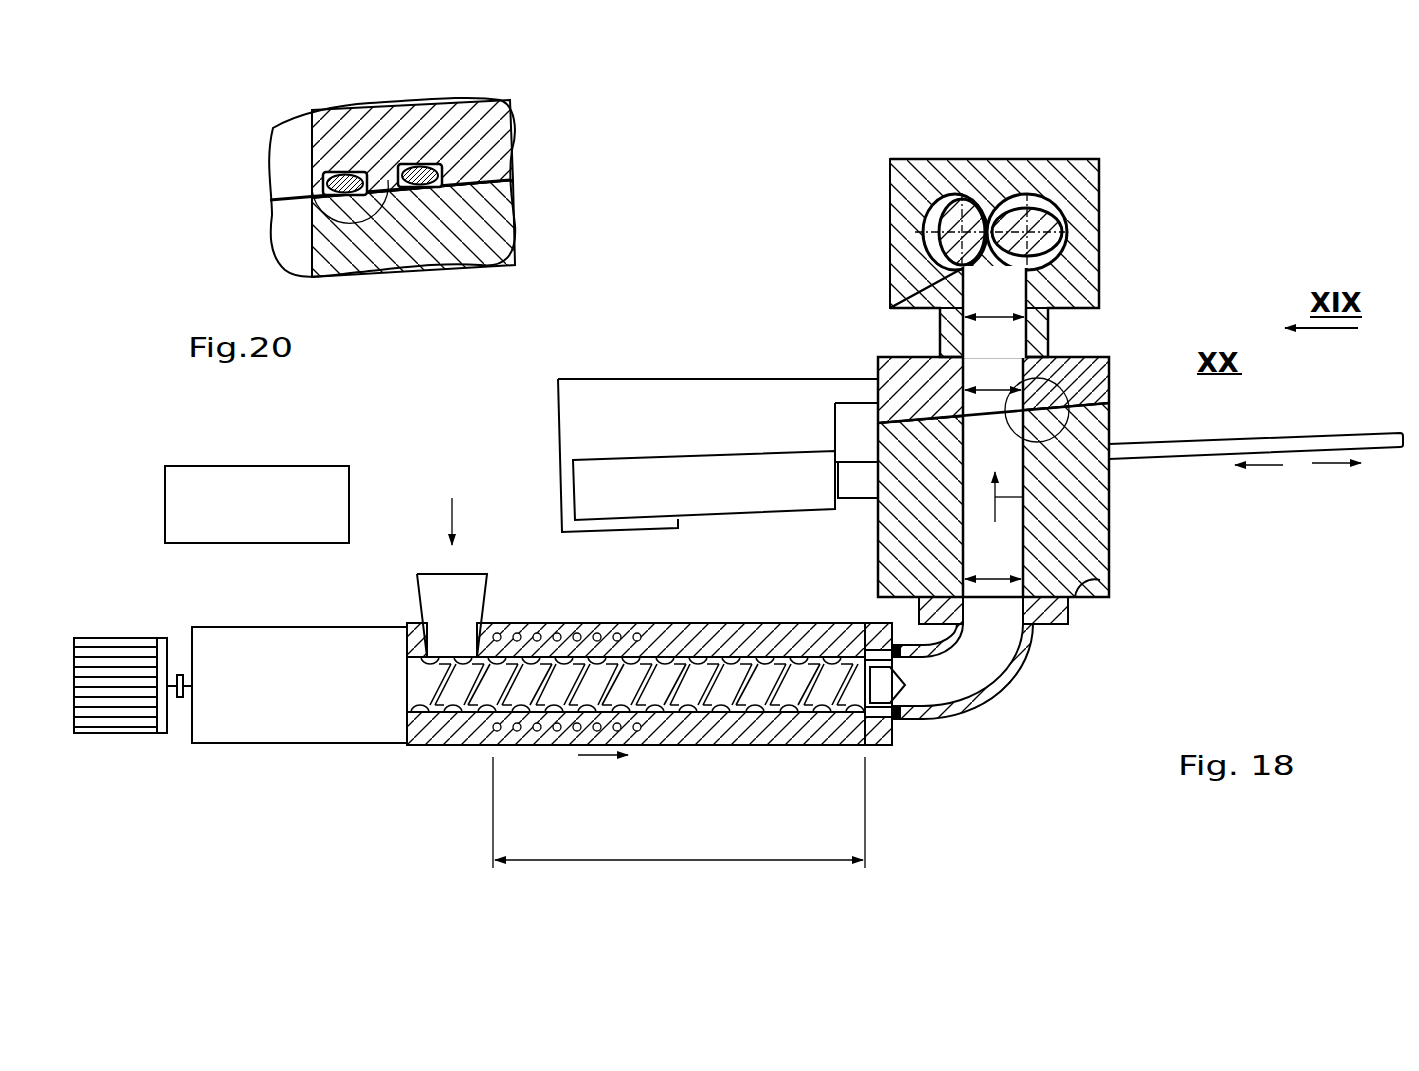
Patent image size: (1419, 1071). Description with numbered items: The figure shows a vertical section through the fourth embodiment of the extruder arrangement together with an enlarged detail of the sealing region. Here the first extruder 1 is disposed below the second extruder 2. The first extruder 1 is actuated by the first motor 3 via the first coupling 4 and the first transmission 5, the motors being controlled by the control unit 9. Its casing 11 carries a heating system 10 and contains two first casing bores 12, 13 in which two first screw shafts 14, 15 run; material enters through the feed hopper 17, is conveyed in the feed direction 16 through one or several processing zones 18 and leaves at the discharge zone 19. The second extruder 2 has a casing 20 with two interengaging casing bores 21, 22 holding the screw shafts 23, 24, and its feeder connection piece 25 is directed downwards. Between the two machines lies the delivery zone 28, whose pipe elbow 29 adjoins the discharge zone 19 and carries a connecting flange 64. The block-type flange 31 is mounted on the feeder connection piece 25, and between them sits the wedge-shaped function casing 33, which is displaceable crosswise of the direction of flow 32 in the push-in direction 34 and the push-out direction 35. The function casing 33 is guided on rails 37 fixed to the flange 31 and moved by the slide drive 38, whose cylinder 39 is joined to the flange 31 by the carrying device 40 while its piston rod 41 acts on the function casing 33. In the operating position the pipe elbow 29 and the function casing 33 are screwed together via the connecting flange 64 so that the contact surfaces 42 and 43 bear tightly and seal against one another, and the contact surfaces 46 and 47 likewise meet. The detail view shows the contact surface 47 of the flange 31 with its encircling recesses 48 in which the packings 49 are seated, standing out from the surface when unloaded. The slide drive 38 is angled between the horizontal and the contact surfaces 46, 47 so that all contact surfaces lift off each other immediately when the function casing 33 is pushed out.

In FIG. 18, the first extruder 1 is at (632, 655).
In FIG. 18, the second extruder 2 is at (993, 213).
In FIG. 18, the first motor 3 is at (90, 728).
In FIG. 18, the first coupling 4 is at (180, 695).
In FIG. 18, the first transmission 5 is at (272, 725).
In FIG. 18, the control unit 9 is at (176, 504).
In FIG. 18, the heating system 10 is at (497, 730).
In FIG. 18, the casing 11 is at (770, 735).
In FIG. 18, the first casing bore 12 is at (637, 637).
In FIG. 18, the first casing bore 13 is at (637, 637).
In FIG. 18, the first screw shaft 14 is at (637, 637).
In FIG. 18, the first screw shaft 15 is at (525, 675).
In FIG. 18, the feed direction 16 is at (598, 763).
In FIG. 18, the feed hopper 17 is at (427, 590).
In FIG. 18, the processing zone 18 is at (679, 812).
In FIG. 18, the discharge zone 19 is at (880, 703).
In FIG. 18, the casing 20 is at (993, 213).
In FIG. 18, the casing bore 21 is at (923, 227).
In FIG. 18, the casing bore 22 is at (1033, 202).
In FIG. 18, the screw shaft 23 is at (961, 198).
In FIG. 18, the screw shaft 24 is at (1040, 253).
In FIG. 18, the feeder connection piece 25 is at (950, 323).
In FIG. 18, the delivery zone 28 is at (1060, 652).
In FIG. 18, the pipe elbow 29 is at (997, 690).
In FIG. 18, the block-type flange 31 is at (1025, 444).
In FIG. 20, the block-type flange 31 is at (367, 120).
In FIG. 18, the direction of flow 32 is at (1000, 497).
In FIG. 18, the function casing 33 is at (1052, 540).
In FIG. 20, the function casing 33 is at (418, 267).
In FIG. 18, the push-in direction 34 is at (1262, 467).
In FIG. 18, the push-out direction 35 is at (1333, 465).
In FIG. 18, the rails 37 is at (1294, 443).
In FIG. 18, the slide drive 38 is at (704, 405).
In FIG. 18, the cylinder 39 is at (685, 472).
In FIG. 18, the carrying device 40 is at (615, 397).
In FIG. 18, the piston rod 41 is at (862, 500).
In FIG. 18, the contact surface 42 is at (918, 620).
In FIG. 18, the contact surface 43 is at (1085, 585).
In FIG. 18, the contact surface 46 is at (1110, 417).
In FIG. 20, the contact surface 46 is at (320, 227).
In FIG. 18, the contact surface 47 is at (937, 415).
In FIG. 20, the contact surface 47 is at (462, 172).
In FIG. 20, the recesses 48 is at (312, 150).
In FIG. 20, the packings 49 is at (423, 163).
In FIG. 18, the connecting flange 64 is at (1060, 613).